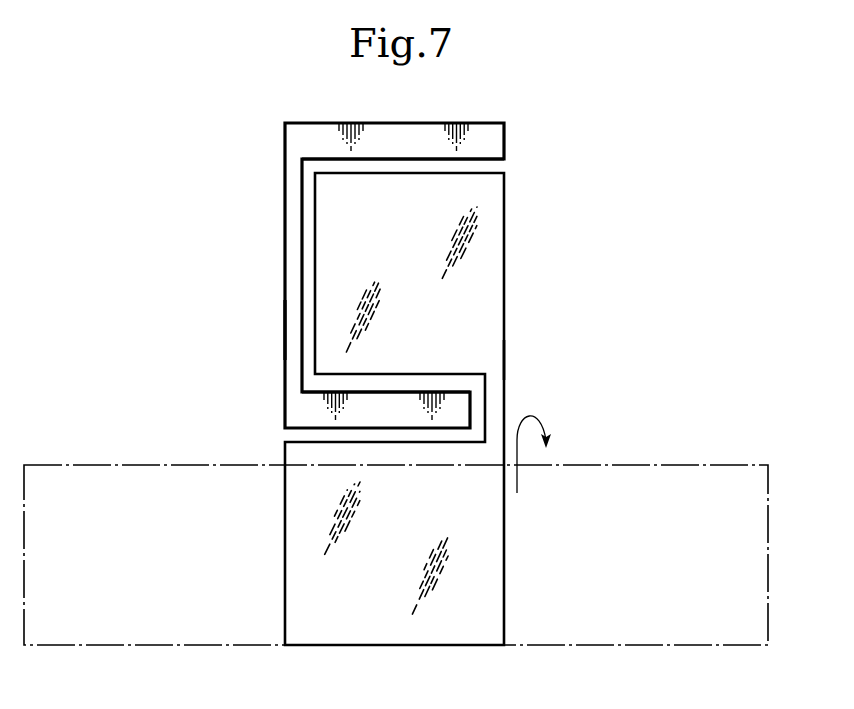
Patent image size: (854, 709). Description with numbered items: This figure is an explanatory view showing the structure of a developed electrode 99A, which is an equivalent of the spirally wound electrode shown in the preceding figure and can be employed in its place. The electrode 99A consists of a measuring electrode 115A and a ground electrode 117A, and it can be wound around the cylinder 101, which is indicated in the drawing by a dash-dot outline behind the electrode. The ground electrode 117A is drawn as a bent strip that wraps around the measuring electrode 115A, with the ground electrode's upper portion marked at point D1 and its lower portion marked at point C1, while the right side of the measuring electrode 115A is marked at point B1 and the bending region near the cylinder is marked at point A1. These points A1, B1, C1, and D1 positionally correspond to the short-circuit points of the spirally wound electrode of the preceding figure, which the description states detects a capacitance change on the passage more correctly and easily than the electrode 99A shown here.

The cylinder 101 is at (700, 464).
The measuring electrode 115A is at (286, 540).
The ground electrode 117A is at (287, 244).
The electrode 99A is at (284, 328).
The point D1 is at (293, 132).
The point C1 is at (300, 410).
The point B1 is at (490, 363).
The point A1 is at (483, 453).